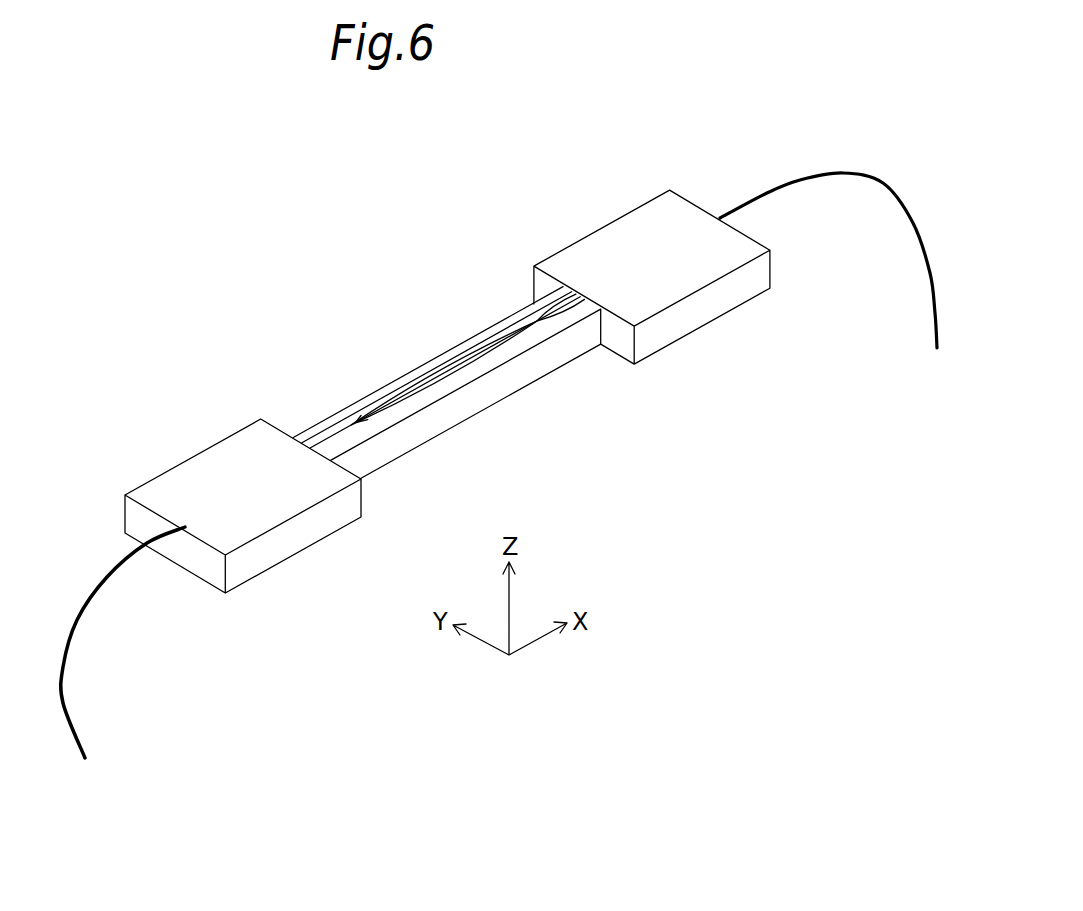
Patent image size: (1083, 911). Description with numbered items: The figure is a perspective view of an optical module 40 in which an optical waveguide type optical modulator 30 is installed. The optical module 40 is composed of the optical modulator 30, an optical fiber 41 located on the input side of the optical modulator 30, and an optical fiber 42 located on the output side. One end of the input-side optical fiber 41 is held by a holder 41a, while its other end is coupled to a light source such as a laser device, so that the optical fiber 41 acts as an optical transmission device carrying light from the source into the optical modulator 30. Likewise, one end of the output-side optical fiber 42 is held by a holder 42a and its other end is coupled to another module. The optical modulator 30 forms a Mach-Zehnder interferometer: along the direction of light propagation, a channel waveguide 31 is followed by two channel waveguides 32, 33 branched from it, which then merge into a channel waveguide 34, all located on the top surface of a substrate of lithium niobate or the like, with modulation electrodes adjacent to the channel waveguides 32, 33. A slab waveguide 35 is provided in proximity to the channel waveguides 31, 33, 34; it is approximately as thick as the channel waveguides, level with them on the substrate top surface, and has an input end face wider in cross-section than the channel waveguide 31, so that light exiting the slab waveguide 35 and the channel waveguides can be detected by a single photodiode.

The optical modulator 30 is at (413, 343).
The channel waveguide 31 is at (340, 426).
The channel waveguide 32 is at (447, 363).
The channel waveguide 33 is at (477, 362).
The channel waveguide 34 is at (566, 297).
The slab waveguide 35 is at (434, 400).
The optical module 40 is at (371, 221).
The optical fiber 41 is at (107, 577).
The holder 41a is at (170, 480).
The optical fiber 42 is at (798, 182).
The holder 42a is at (643, 220).